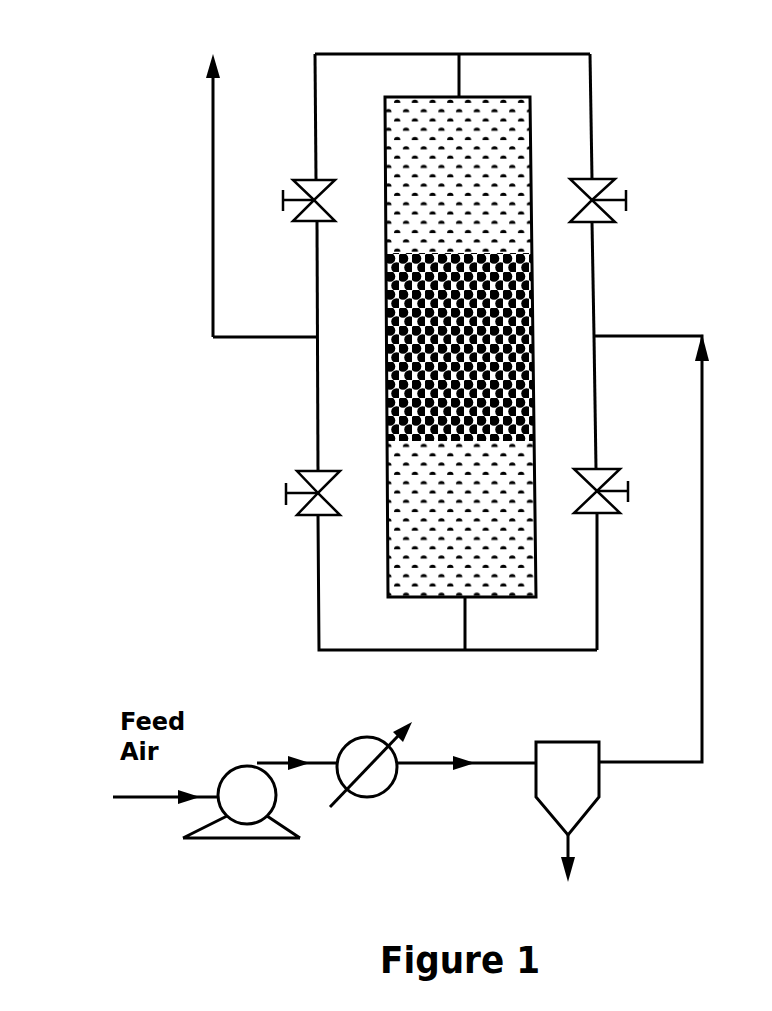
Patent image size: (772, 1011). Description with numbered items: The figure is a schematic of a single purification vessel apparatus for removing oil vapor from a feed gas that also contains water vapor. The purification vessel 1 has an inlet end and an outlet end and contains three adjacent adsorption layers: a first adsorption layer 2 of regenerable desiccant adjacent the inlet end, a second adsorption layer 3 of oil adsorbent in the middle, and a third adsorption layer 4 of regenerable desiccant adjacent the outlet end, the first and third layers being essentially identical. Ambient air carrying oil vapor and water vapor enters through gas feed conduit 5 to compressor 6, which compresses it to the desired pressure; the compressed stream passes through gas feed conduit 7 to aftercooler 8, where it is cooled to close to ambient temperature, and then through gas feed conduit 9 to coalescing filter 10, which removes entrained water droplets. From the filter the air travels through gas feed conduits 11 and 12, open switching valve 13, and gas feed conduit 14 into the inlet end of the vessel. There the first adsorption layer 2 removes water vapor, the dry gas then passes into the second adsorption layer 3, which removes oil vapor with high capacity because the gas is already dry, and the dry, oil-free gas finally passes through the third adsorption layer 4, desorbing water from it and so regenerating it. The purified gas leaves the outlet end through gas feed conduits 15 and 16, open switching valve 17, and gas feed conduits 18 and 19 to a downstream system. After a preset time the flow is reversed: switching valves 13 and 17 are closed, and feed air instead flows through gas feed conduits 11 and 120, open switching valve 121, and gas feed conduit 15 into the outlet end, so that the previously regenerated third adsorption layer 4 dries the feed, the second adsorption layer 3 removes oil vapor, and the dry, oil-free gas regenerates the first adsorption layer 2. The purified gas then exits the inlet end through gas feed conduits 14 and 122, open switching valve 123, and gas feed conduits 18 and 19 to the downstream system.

The purification vessel 1 is at (452, 361).
The first adsorption layer 2 is at (525, 565).
The second adsorption layer 3 is at (532, 343).
The third adsorption layer 4 is at (510, 173).
The gas feed conduit 5 is at (153, 797).
The compressor 6 is at (240, 840).
The gas feed conduit 7 is at (317, 763).
The aftercooler 8 is at (372, 797).
The gas feed conduit 9 is at (513, 762).
The coalescing filter 10 is at (580, 815).
The gas feed conduit 11 is at (702, 545).
The gas feed conduit 12 is at (597, 410).
The switching valve 13 is at (628, 488).
The gas feed conduit 14 is at (465, 640).
The gas feed conduit 15 is at (459, 85).
The gas feed conduit 16 is at (315, 108).
The switching valve 17 is at (280, 197).
The gas feed conduit 18 is at (237, 335).
The gas feed conduit 19 is at (212, 179).
The gas feed conduit 120 is at (593, 282).
The switching valve 121 is at (626, 197).
The gas feed conduit 122 is at (318, 585).
The switching valve 123 is at (286, 488).